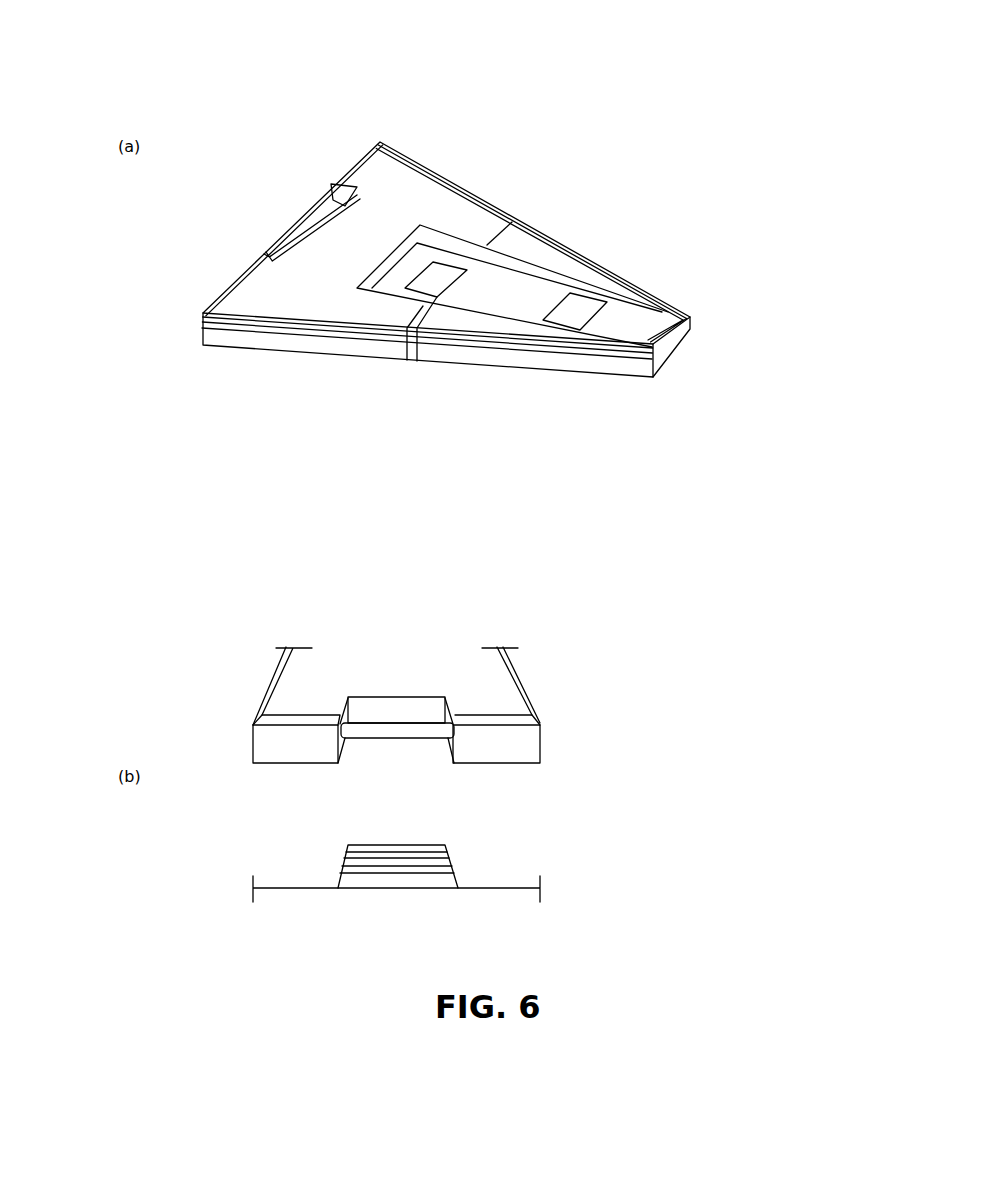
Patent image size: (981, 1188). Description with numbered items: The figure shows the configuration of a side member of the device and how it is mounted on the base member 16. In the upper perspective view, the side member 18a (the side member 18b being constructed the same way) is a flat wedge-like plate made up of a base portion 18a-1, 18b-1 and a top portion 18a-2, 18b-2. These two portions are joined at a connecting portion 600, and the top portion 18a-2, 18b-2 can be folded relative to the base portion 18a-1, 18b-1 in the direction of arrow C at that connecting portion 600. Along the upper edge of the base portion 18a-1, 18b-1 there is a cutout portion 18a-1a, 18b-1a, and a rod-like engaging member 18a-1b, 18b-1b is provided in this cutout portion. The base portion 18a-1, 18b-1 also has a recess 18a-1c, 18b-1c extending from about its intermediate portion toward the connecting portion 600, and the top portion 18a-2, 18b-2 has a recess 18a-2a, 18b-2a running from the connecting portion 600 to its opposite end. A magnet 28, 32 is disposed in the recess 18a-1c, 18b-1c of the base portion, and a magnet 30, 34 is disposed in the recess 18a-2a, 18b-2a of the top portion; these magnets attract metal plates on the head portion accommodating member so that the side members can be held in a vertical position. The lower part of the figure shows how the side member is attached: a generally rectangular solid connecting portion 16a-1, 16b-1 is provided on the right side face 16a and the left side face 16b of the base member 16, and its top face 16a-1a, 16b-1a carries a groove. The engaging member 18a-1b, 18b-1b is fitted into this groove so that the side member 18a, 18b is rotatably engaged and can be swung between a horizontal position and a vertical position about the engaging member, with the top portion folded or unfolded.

The side member 18a is at (426, 408).
The side member 18b is at (440, 116).
The base portion 18a-1 is at (457, 338).
The base portion 18b-1 is at (282, 340).
The cutout portion 18a-1a is at (278, 174).
The cutout portion 18b-1a is at (330, 190).
The engaging member 18a-1b is at (301, 479).
The engaging member 18b-1b is at (400, 726).
The recess 18a-1c is at (493, 181).
The recess 18b-1c is at (457, 245).
The top portion 18a-2 is at (588, 384).
The top portion 18b-2 is at (523, 360).
The recess 18a-2a is at (667, 270).
The recess 18b-2a is at (630, 317).
The magnet 28 is at (407, 356).
The magnet 32 is at (423, 290).
The magnet 30 is at (591, 372).
The magnet 34 is at (572, 317).
The connecting portion 600 is at (433, 340).
The arrow C is at (602, 233).
The base member 16 is at (290, 902).
The right side face 16a is at (425, 870).
The left side face 16b is at (507, 887).
The connecting portion 16a-1 is at (445, 845).
The connecting portion 16b-1 is at (453, 882).
The top face 16a-1a is at (378, 838).
The top face 16b-1a is at (345, 862).